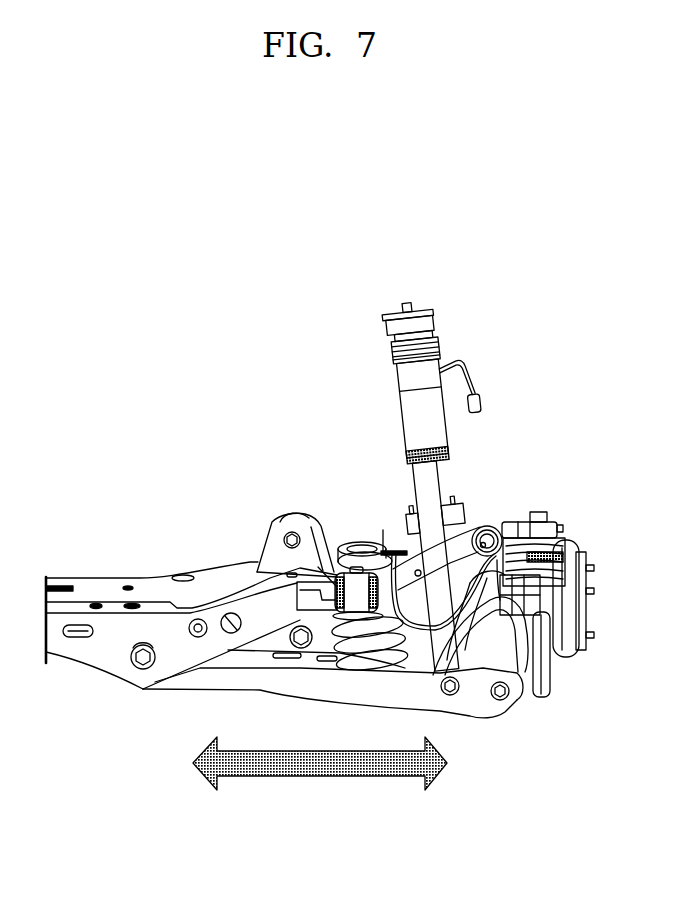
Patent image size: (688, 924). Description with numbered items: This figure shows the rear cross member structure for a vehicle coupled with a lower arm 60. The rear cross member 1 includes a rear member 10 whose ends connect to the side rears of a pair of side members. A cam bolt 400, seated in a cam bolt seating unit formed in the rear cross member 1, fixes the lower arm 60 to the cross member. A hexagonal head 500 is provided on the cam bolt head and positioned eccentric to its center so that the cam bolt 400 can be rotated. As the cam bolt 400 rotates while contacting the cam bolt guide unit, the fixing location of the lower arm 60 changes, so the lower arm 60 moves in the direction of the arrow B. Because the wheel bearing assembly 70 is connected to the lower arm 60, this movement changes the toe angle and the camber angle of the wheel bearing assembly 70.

The rear cross member 1 is at (82, 554).
The rear member 10 is at (153, 622).
The lower arm 60 is at (466, 707).
The wheel bearing assembly 70 is at (568, 650).
The cam bolt 400 is at (103, 668).
The hexagonal head 500 is at (143, 670).
The arrow B is at (323, 779).